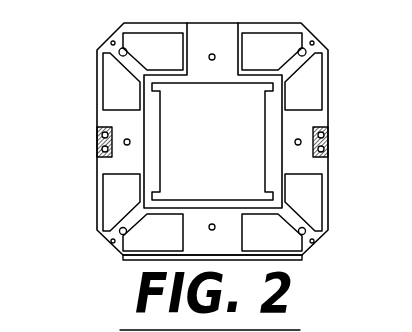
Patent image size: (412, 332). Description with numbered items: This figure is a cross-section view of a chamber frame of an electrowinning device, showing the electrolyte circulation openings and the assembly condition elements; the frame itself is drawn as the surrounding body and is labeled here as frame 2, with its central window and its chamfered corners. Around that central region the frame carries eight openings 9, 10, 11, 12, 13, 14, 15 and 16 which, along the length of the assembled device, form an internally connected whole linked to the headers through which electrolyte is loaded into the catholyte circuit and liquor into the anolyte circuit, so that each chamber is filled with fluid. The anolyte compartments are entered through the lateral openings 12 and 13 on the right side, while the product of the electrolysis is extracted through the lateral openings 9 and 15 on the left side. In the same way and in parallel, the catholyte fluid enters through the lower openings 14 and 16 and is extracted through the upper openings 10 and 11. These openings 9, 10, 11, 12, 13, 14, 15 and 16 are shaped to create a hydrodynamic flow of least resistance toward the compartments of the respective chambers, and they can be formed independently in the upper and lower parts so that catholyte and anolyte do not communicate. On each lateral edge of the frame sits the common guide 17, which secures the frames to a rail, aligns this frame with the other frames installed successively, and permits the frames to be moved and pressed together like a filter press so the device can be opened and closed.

The mounting plate body 2 is at (173, 190).
The lateral opening 9 is at (123, 82).
The opening 10 is at (157, 52).
The opening 11 is at (270, 50).
The lateral opening 12 is at (302, 80).
The lateral opening 13 is at (302, 203).
The opening 14 is at (268, 232).
The lateral opening 15 is at (121, 203).
The opening 16 is at (155, 231).
The common guide 17 is at (97, 141).